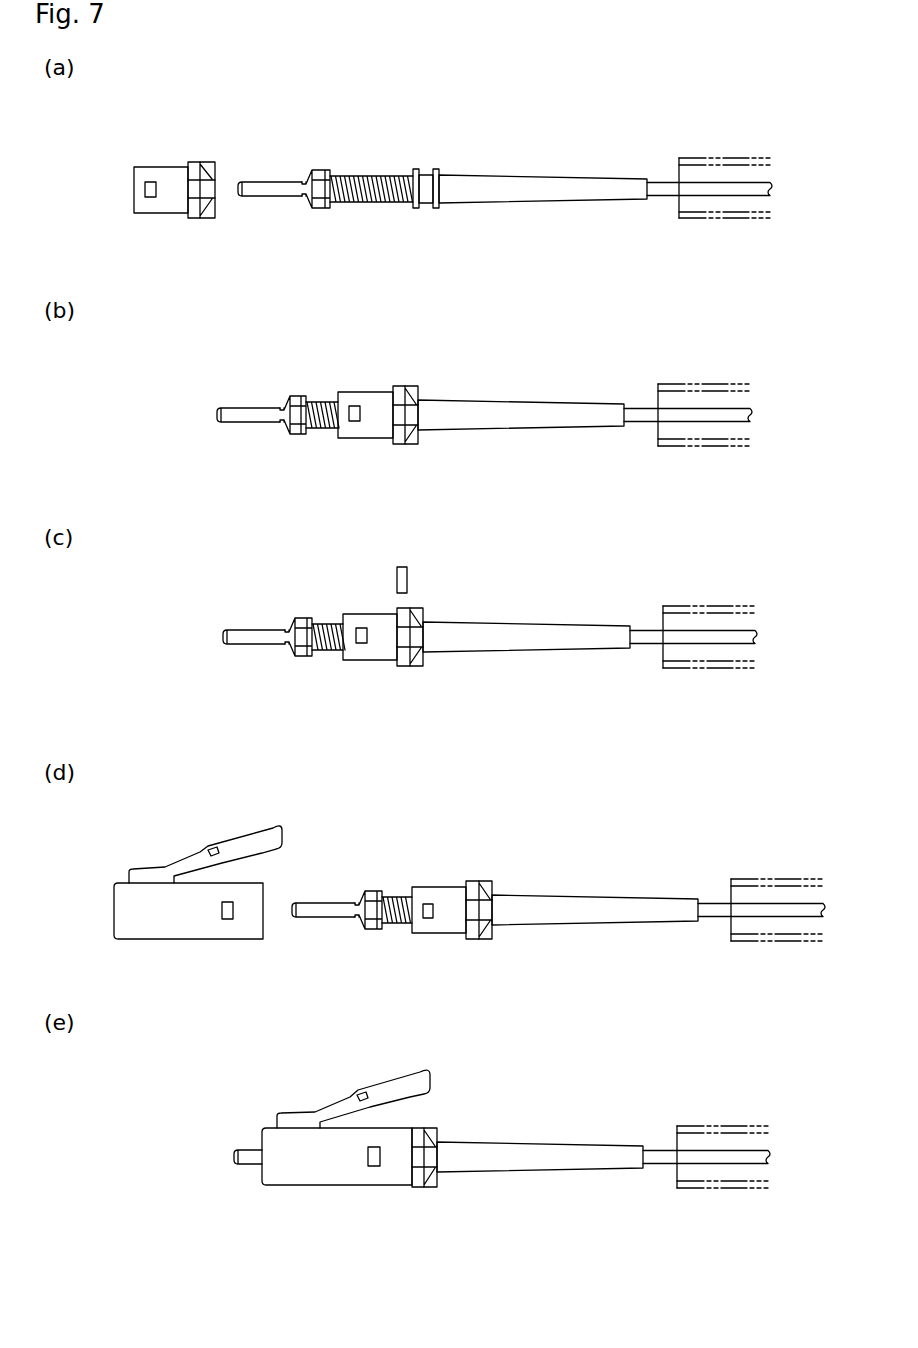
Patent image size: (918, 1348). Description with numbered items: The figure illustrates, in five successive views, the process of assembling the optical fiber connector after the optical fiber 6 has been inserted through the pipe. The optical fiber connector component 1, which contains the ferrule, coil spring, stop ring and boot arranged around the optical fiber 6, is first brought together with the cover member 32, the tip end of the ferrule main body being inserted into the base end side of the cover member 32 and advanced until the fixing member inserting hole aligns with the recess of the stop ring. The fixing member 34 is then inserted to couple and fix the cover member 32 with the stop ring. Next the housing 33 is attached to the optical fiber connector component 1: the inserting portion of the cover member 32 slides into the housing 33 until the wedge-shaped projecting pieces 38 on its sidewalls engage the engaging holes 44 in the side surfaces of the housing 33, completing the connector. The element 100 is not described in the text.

The optical fiber connector component 1 is at (415, 170).
The optical fiber 6 is at (652, 183).
The cover member 32 is at (313, 687).
The housing 33 is at (272, 1035).
The fixing member 34 is at (408, 584).
The projecting pieces 38 is at (150, 182).
The engaging holes 44 is at (228, 917).
The receptacle adapter 100 is at (728, 157).